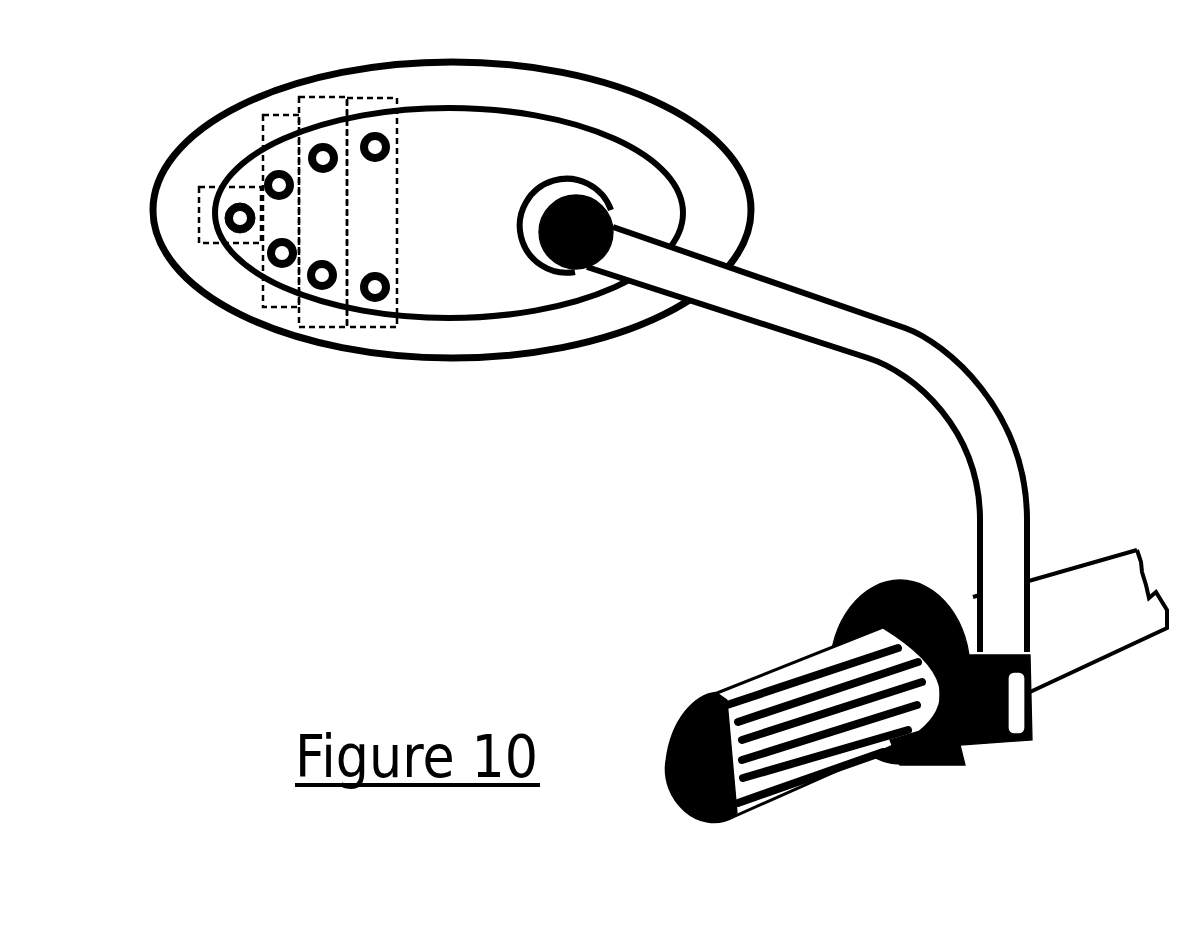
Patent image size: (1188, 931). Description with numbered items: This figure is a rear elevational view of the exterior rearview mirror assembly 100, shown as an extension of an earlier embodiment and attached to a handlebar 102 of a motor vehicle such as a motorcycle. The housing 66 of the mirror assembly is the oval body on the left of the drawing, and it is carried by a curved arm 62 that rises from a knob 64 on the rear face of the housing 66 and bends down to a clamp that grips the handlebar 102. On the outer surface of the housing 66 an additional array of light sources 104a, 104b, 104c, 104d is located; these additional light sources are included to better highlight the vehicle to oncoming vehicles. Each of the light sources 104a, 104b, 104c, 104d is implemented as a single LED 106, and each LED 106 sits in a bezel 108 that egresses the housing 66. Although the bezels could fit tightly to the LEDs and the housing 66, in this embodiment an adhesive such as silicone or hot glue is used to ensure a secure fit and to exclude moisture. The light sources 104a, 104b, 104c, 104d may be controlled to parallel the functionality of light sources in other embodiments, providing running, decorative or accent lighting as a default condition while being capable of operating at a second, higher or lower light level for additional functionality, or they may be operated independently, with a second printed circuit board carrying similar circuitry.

The exterior rearview mirror assembly 100 is at (800, 108).
The arm 62 is at (922, 337).
The knob 64 is at (587, 263).
The housing 66 is at (553, 357).
The handlebar 102 is at (1082, 598).
The light source 104a is at (158, 240).
The light source 104b is at (273, 308).
The light source 104c is at (326, 327).
The light source 104d is at (377, 327).
The LED 106 is at (222, 226).
The bezel 108 is at (226, 210).